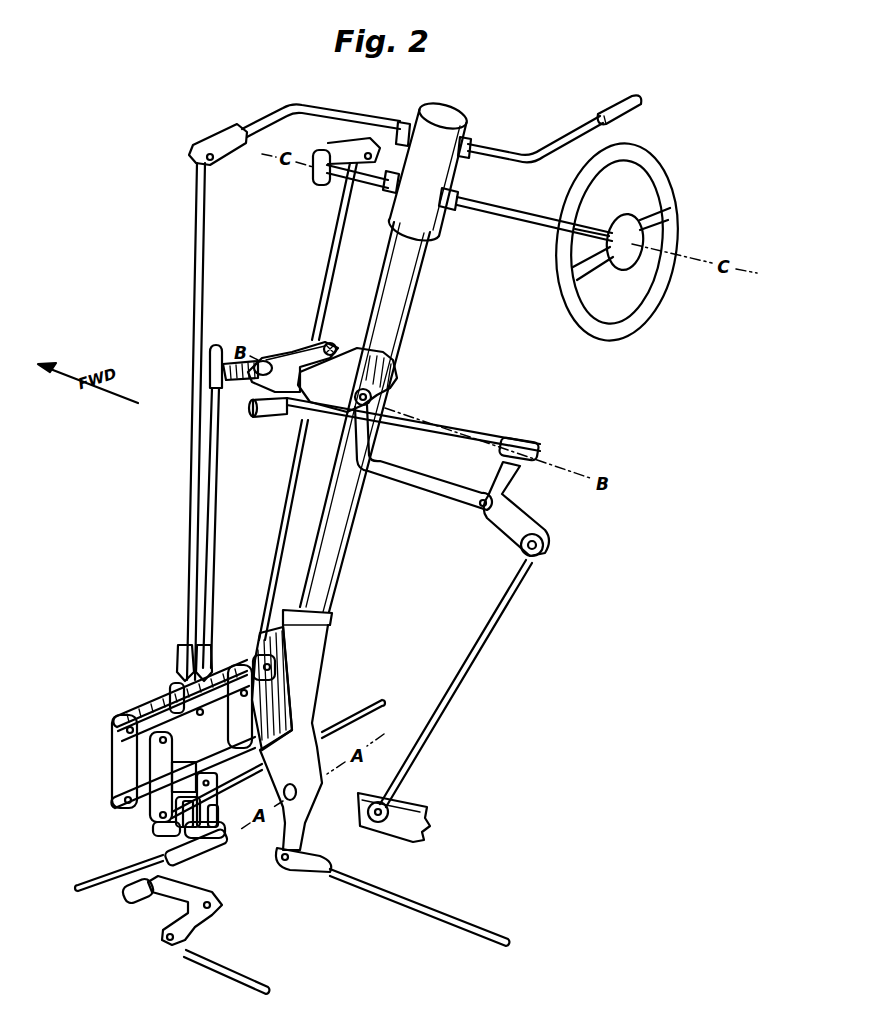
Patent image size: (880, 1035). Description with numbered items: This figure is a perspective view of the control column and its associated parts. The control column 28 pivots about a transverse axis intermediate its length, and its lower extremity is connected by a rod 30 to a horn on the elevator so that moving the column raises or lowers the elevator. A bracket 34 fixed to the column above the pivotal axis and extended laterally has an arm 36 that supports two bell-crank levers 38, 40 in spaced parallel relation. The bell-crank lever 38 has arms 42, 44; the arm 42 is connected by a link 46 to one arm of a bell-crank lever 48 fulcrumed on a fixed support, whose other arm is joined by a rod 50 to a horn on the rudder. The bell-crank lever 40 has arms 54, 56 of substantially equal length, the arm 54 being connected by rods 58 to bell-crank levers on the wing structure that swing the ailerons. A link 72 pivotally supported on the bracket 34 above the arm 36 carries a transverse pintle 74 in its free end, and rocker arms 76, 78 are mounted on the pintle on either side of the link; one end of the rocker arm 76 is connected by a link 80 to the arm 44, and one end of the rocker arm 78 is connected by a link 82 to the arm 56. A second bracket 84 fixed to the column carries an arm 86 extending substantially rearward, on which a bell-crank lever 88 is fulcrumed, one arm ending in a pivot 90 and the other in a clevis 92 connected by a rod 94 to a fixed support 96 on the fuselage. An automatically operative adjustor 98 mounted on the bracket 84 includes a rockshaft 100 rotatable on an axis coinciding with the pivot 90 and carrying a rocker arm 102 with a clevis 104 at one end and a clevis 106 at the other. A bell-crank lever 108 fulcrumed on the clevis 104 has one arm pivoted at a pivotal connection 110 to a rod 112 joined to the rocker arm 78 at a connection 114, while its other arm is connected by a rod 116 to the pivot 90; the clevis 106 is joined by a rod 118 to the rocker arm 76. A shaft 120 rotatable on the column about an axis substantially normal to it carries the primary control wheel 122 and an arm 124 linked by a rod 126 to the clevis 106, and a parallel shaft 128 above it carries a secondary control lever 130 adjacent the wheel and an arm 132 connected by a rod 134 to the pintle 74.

The control column 28 is at (412, 300).
The rod 30 is at (400, 895).
The bracket 34 is at (286, 612).
The arm 36 is at (237, 735).
The bell-crank lever 38 is at (209, 782).
The bell-crank lever 40 is at (184, 763).
The arm 42 is at (218, 808).
The arm 44 is at (150, 825).
The link 46 is at (190, 860).
The bell-crank lever 48 is at (218, 899).
The rod 50 is at (250, 978).
The arm 54 is at (183, 828).
The arm 56 is at (115, 803).
The rods 58 is at (342, 723).
The link 72 is at (253, 657).
The pintle 74 is at (178, 683).
The rocker arm 76 is at (190, 722).
The rocker arm 78 is at (150, 703).
The link 80 is at (155, 770).
The link 82 is at (110, 760).
The bracket 84 is at (398, 375).
The arm 86 is at (388, 488).
The bell-crank lever 88 is at (500, 532).
The pivot 90 is at (522, 462).
The clevis 92 is at (540, 556).
The rod 94 is at (488, 650).
The fixed support 96 is at (415, 805).
The automatically operative adjustor 98 is at (277, 360).
The rockshaft 100 is at (283, 400).
The rocker arm 102 is at (296, 352).
The clevis 104 is at (263, 361).
The clevis 106 is at (332, 343).
The bell-crank lever 108 is at (238, 381).
The pivotal connection 110 is at (218, 350).
The rod 112 is at (213, 487).
The connection 114 is at (192, 660).
The rod 116 is at (405, 426).
The rod 118 is at (282, 519).
The shaft 120 is at (488, 214).
The primary control wheel 122 is at (672, 192).
The arm 124 is at (340, 145).
The rod 126 is at (332, 242).
The shaft 128 is at (485, 146).
The secondary control lever 130 is at (603, 108).
The arm 132 is at (260, 120).
The rod 134 is at (196, 258).